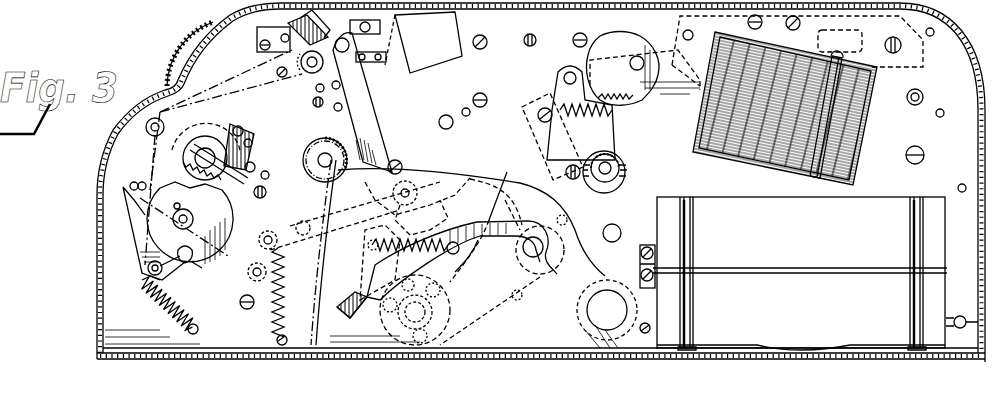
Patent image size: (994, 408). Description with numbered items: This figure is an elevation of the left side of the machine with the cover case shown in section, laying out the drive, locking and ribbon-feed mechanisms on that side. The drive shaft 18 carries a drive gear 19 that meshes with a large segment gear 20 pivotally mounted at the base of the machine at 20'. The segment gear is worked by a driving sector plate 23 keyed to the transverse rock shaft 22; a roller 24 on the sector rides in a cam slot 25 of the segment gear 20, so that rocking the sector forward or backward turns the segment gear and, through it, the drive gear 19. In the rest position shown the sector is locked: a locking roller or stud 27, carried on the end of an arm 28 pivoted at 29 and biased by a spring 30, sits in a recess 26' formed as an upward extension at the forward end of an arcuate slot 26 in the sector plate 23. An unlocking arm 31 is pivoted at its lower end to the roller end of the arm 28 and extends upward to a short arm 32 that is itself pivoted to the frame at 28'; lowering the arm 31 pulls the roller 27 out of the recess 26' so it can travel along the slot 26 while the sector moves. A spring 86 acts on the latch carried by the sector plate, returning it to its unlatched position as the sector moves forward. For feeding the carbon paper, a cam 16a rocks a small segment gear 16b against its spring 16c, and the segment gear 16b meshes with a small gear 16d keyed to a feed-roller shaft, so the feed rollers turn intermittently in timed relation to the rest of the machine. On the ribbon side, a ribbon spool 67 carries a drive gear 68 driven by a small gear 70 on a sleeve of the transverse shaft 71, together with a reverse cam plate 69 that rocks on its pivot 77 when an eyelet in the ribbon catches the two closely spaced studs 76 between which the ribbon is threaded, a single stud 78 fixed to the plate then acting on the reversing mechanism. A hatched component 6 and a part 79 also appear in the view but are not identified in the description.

The hatched plate 6 is at (722, 158).
The cam 16a is at (632, 48).
The small segment gear 16b is at (608, 124).
The spring 16c is at (598, 85).
The small driving gear 16d is at (620, 163).
The drive shaft 18 is at (320, 166).
The drive gear 19 is at (320, 148).
The segment gear 20 is at (450, 252).
The segment gear pivot 20' is at (587, 314).
The rock shaft 22 is at (408, 312).
The driving sector plate 23 is at (450, 176).
The roller 24 is at (540, 262).
The cam slot 25 is at (490, 218).
The slot 26 is at (465, 265).
The recess 26' is at (423, 210).
The locking roller or stud 27 is at (410, 180).
The arm 28 is at (256, 252).
The short arm pivot 28' is at (286, 68).
The arm pivot 29 is at (300, 226).
The spring 30 is at (282, 295).
The unlocking arm 31 is at (362, 94).
The short arm 32 is at (323, 96).
The ribbon spool 67 is at (145, 223).
The spool drive gear 68 is at (178, 178).
The reverse cam plate 69 is at (135, 235).
The small gear 70 is at (200, 136).
The transverse shaft 71 is at (190, 150).
The small studs 76 is at (130, 182).
The pivot 77 is at (143, 276).
The single stud 78 is at (232, 180).
The pin 79 is at (252, 165).
The spring 86 is at (428, 258).